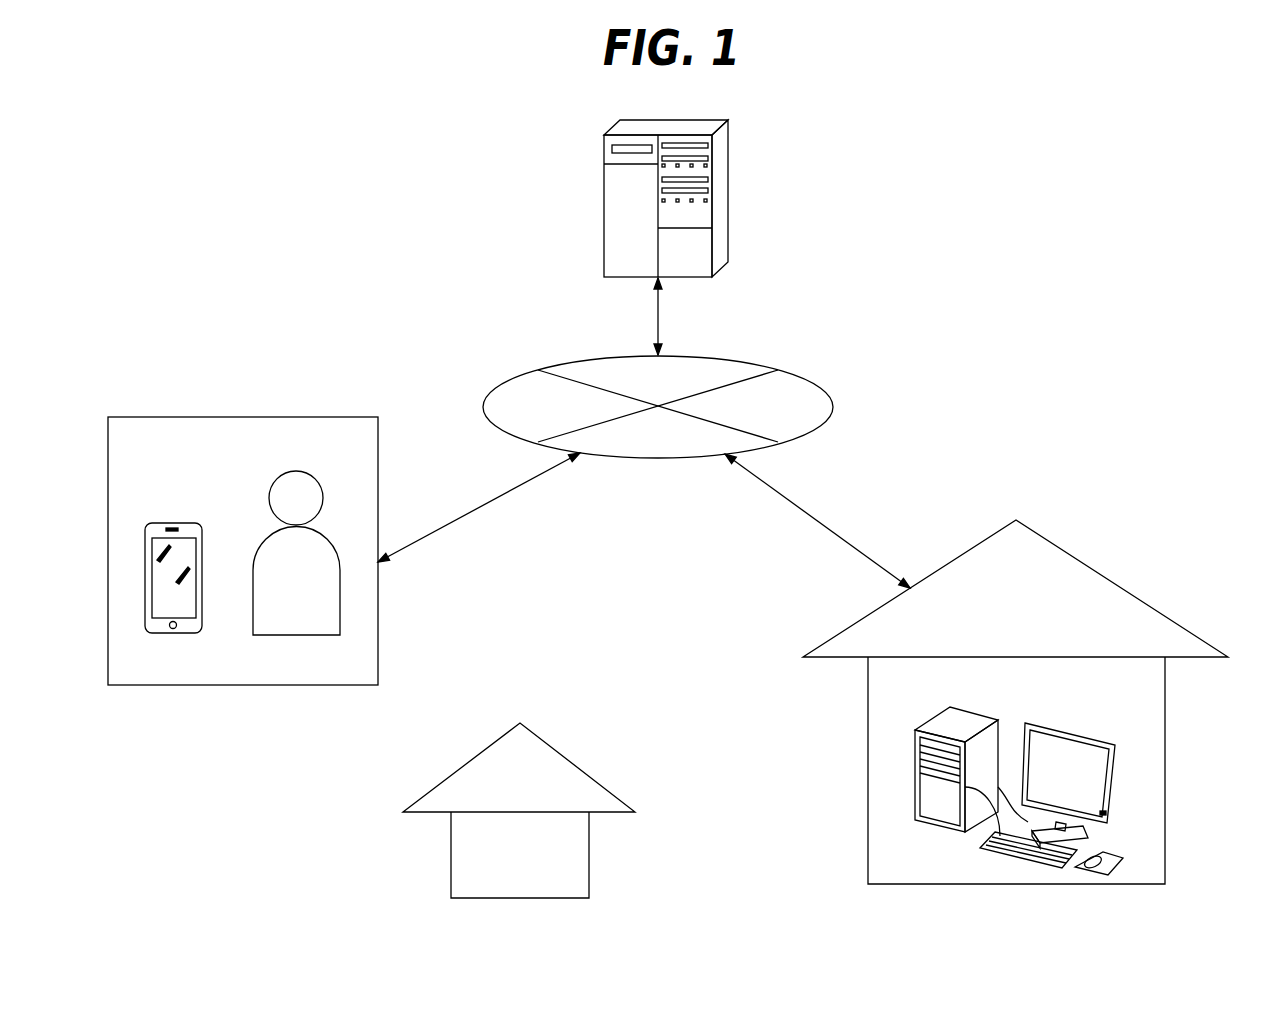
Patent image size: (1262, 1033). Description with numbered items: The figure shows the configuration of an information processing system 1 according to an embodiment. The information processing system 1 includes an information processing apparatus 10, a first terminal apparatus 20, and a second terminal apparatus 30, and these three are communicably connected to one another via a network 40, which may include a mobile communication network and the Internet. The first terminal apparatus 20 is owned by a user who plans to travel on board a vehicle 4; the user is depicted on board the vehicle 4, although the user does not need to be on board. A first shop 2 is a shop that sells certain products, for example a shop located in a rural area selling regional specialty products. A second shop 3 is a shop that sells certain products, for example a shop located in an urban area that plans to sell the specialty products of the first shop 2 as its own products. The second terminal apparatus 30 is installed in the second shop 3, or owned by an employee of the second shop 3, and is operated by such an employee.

The information processing system 1 is at (957, 183).
The information processing apparatus 10 is at (728, 200).
The network 40 is at (812, 380).
The vehicle 4 is at (243, 417).
The first terminal apparatus 20 is at (172, 523).
The first shop 2 is at (580, 770).
The second shop 3 is at (1118, 585).
The second terminal apparatus 30 is at (945, 710).